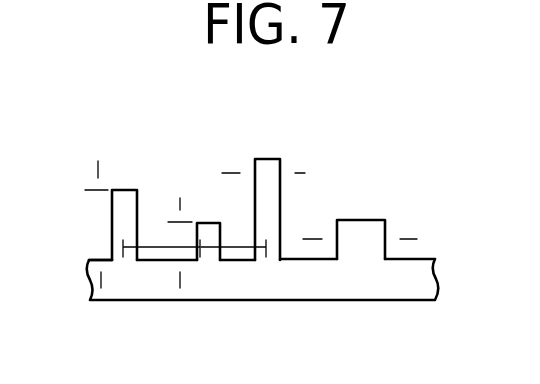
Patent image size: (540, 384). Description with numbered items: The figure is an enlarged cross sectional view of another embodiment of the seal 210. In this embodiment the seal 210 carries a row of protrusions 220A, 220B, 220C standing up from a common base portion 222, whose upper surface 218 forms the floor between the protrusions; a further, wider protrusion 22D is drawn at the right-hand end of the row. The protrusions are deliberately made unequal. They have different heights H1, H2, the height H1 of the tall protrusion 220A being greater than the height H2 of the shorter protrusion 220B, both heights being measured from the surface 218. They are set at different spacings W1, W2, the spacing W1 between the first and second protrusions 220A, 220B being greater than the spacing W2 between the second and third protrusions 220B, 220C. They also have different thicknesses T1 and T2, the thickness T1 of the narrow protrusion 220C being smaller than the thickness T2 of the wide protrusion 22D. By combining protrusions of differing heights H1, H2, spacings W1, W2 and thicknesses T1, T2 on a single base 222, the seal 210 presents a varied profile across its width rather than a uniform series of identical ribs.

The seal 210 is at (325, 132).
The top surface of substrate 218 is at (97, 259).
The protrusion 220A is at (125, 203).
The protrusion 220B is at (210, 226).
The protrusion 220C is at (268, 168).
The fourth rib 22D is at (361, 237).
The substrate 222 is at (275, 283).
The height H1 is at (98, 161).
The height H2 is at (181, 284).
The spacing W1 is at (158, 241).
The spacing W2 is at (235, 243).
The thickness T1 is at (305, 174).
The thickness T2 is at (413, 239).